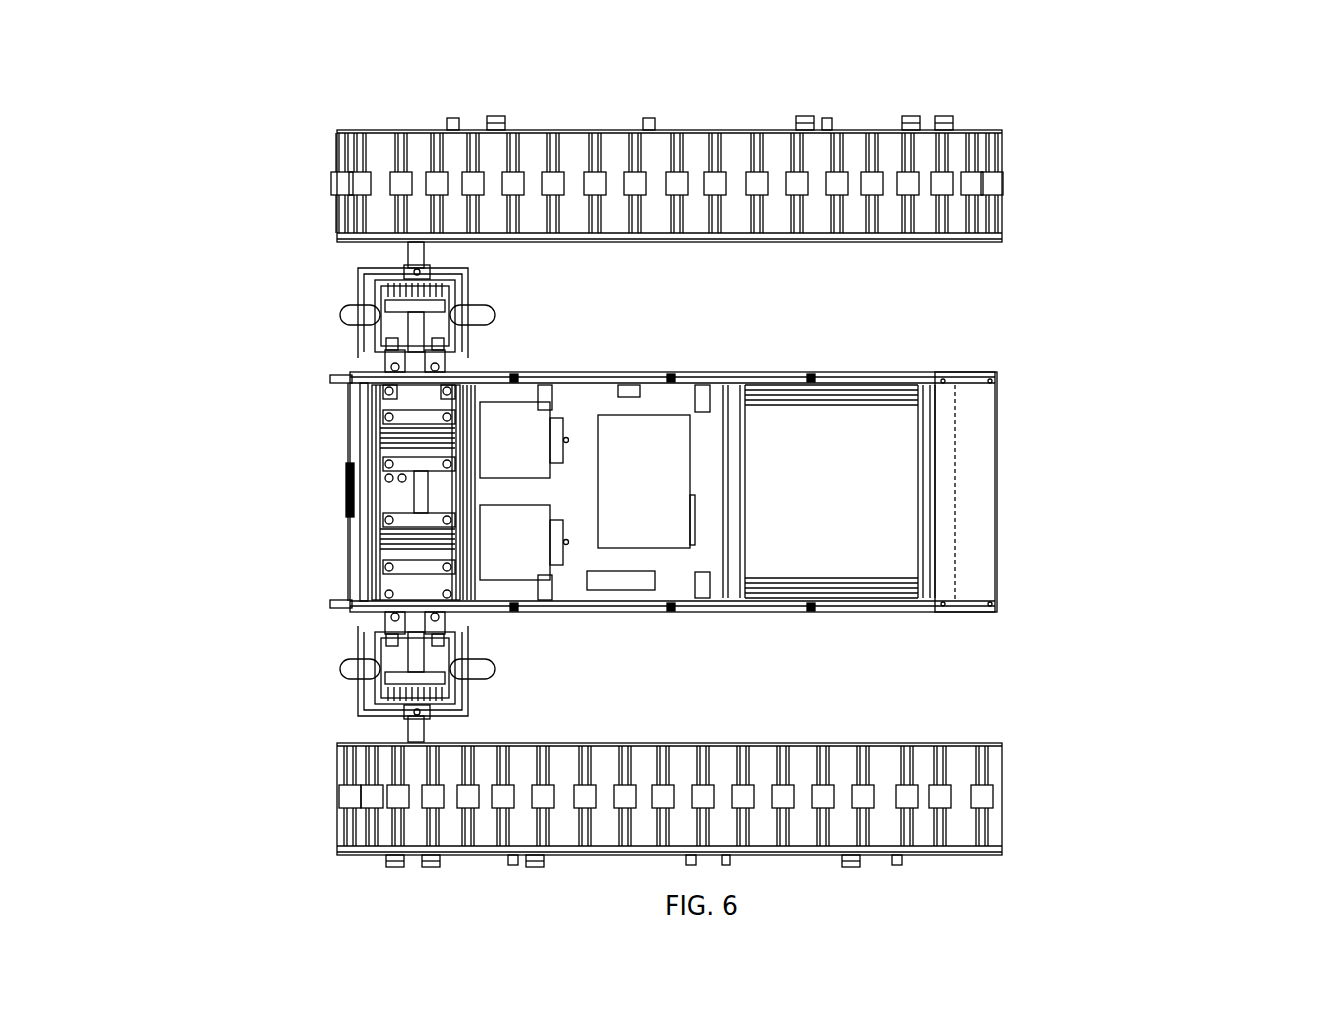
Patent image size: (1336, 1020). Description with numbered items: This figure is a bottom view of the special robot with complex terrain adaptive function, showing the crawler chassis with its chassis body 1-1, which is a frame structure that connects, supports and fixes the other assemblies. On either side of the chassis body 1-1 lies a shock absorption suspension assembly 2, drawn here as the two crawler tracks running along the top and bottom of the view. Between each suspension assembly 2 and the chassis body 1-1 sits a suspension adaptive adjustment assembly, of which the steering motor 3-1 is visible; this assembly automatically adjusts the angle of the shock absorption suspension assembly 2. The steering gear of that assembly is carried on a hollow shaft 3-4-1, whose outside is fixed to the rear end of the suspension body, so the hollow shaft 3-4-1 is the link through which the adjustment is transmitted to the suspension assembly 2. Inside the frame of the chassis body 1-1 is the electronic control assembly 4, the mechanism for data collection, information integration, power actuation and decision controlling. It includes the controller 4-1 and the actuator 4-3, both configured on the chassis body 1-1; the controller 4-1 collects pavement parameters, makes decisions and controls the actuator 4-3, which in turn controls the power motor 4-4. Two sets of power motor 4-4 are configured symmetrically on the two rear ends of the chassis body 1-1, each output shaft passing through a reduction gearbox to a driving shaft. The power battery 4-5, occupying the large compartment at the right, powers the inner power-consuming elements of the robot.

The shock absorption suspension assembly 2 is at (1002, 150).
The steering motor 3-1 is at (378, 356).
The hollow shaft 3-4-1 is at (410, 247).
The electronic control assembly 4 is at (368, 546).
The power motor 4-4 is at (515, 412).
The actuator 4-3 is at (648, 432).
The power battery 4-5 is at (830, 435).
The controller 4-1 is at (619, 582).
The chassis body 1-1 is at (935, 380).